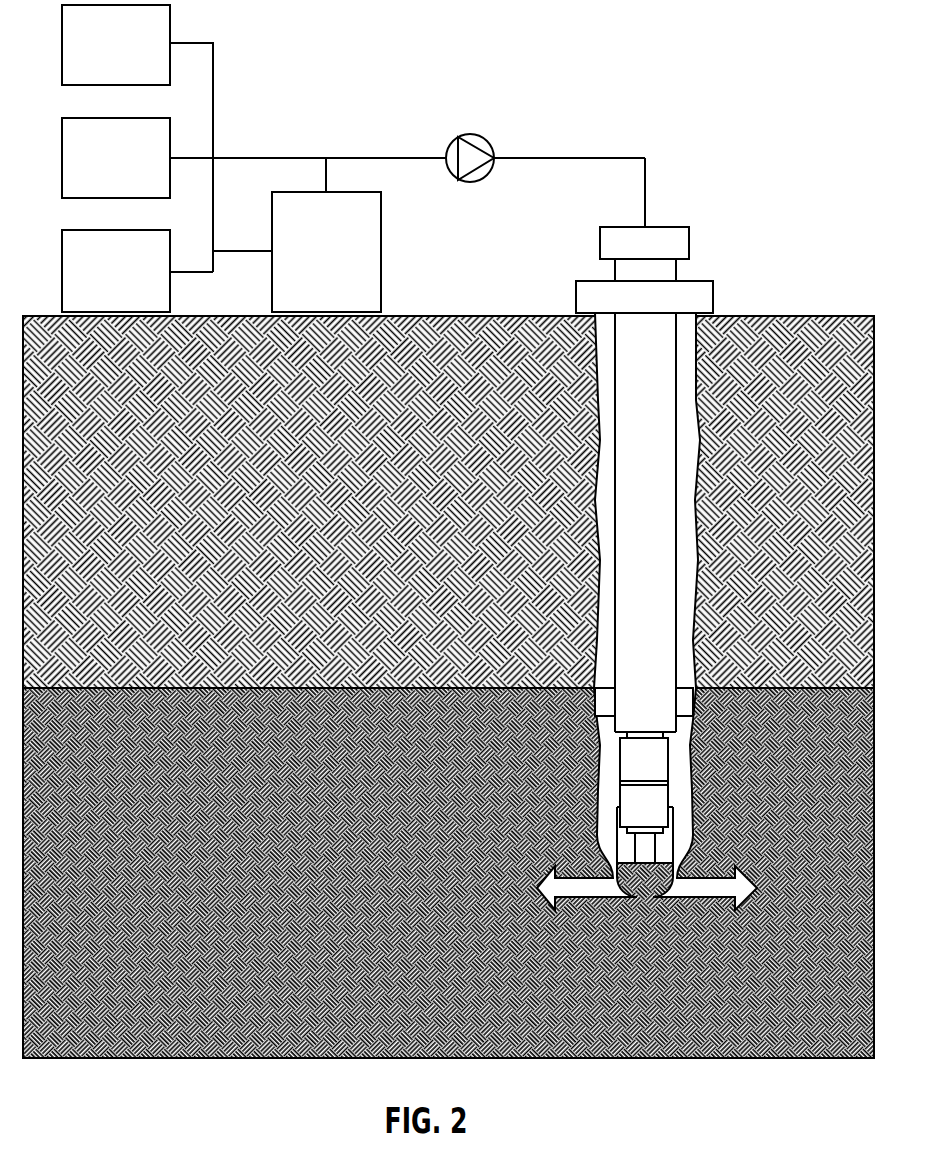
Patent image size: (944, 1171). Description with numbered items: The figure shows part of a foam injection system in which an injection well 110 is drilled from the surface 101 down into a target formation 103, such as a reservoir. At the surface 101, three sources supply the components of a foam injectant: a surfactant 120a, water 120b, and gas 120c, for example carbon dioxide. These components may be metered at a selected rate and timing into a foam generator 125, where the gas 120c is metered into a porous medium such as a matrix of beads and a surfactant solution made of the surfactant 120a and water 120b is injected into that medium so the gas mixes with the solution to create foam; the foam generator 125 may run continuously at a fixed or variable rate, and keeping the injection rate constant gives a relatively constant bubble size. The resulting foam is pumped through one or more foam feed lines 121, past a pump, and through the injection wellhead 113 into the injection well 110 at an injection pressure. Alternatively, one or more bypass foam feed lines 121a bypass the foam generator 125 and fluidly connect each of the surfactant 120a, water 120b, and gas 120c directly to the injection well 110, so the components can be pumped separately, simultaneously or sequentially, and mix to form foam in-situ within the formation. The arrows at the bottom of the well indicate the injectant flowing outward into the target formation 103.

The surface 101 is at (473, 316).
The target formation 103 is at (440, 965).
The injection well 110 is at (620, 128).
The injection wellhead 113 is at (700, 280).
The surfactant 120a is at (147, 59).
The water 120b is at (147, 173).
The gas 120c is at (147, 287).
The foam feed line 121 is at (382, 156).
The bypass foam feed line 121a is at (272, 156).
The foam generator 125 is at (305, 266).